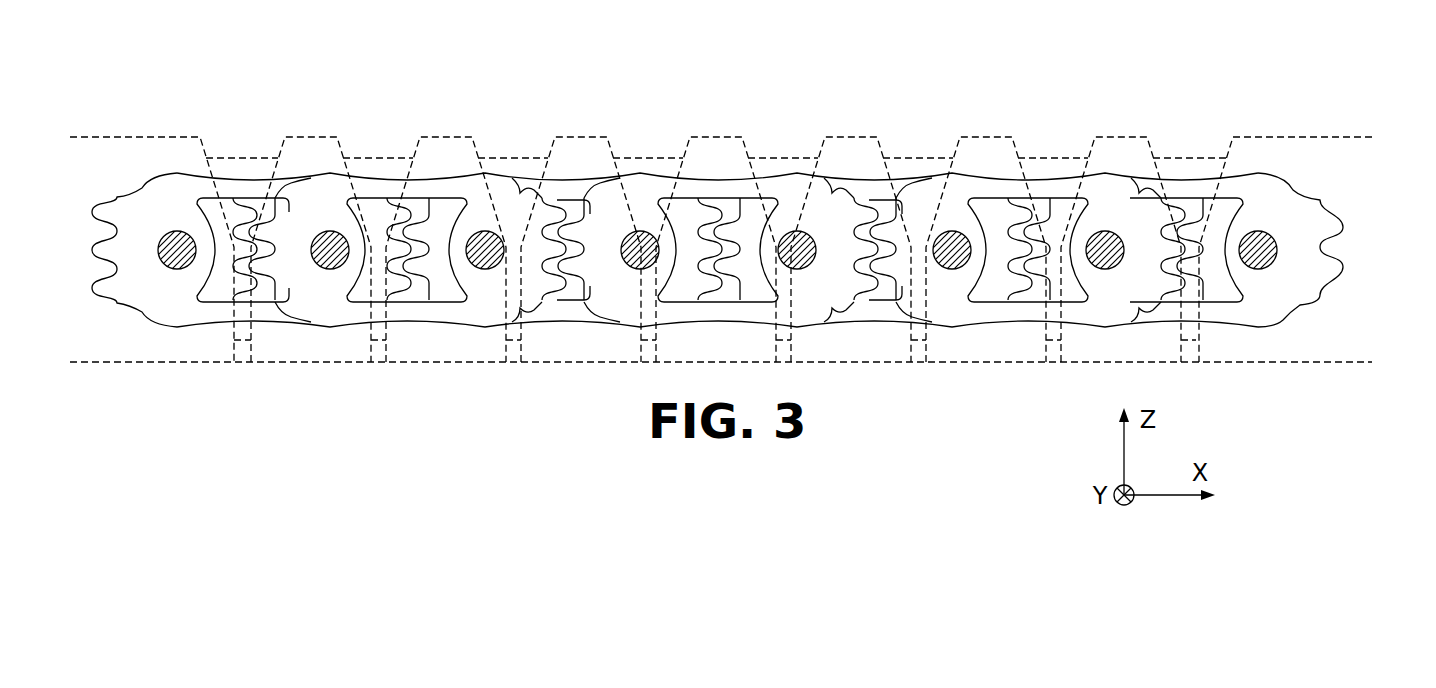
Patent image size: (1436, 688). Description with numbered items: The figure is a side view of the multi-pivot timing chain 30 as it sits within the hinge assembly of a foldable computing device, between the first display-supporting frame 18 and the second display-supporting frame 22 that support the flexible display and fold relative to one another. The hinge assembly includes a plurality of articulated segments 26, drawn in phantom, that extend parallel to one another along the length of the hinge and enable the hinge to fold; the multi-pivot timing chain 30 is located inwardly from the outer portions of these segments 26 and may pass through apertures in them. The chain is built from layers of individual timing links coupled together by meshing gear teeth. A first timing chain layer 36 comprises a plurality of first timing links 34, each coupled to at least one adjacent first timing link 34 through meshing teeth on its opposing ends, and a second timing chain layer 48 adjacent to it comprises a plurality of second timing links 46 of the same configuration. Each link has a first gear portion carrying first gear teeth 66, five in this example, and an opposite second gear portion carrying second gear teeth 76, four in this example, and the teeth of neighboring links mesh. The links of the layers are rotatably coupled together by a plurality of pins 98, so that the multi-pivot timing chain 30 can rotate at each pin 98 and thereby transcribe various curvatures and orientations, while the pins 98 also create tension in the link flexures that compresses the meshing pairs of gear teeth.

The first display-supporting frame 18 is at (147, 363).
The second display-supporting frame 22 is at (1292, 363).
The articulated segments 26 is at (318, 363).
The multi-pivot timing chain 30 is at (513, 117).
The first timing links 34 is at (387, 190).
The first timing chain layer 36 is at (1088, 334).
The second timing links 46 is at (248, 190).
The second timing chain layer 48 is at (1362, 232).
The first gear teeth 66 is at (97, 210).
The second gear teeth 76 is at (402, 270).
The pins 98 is at (473, 232).